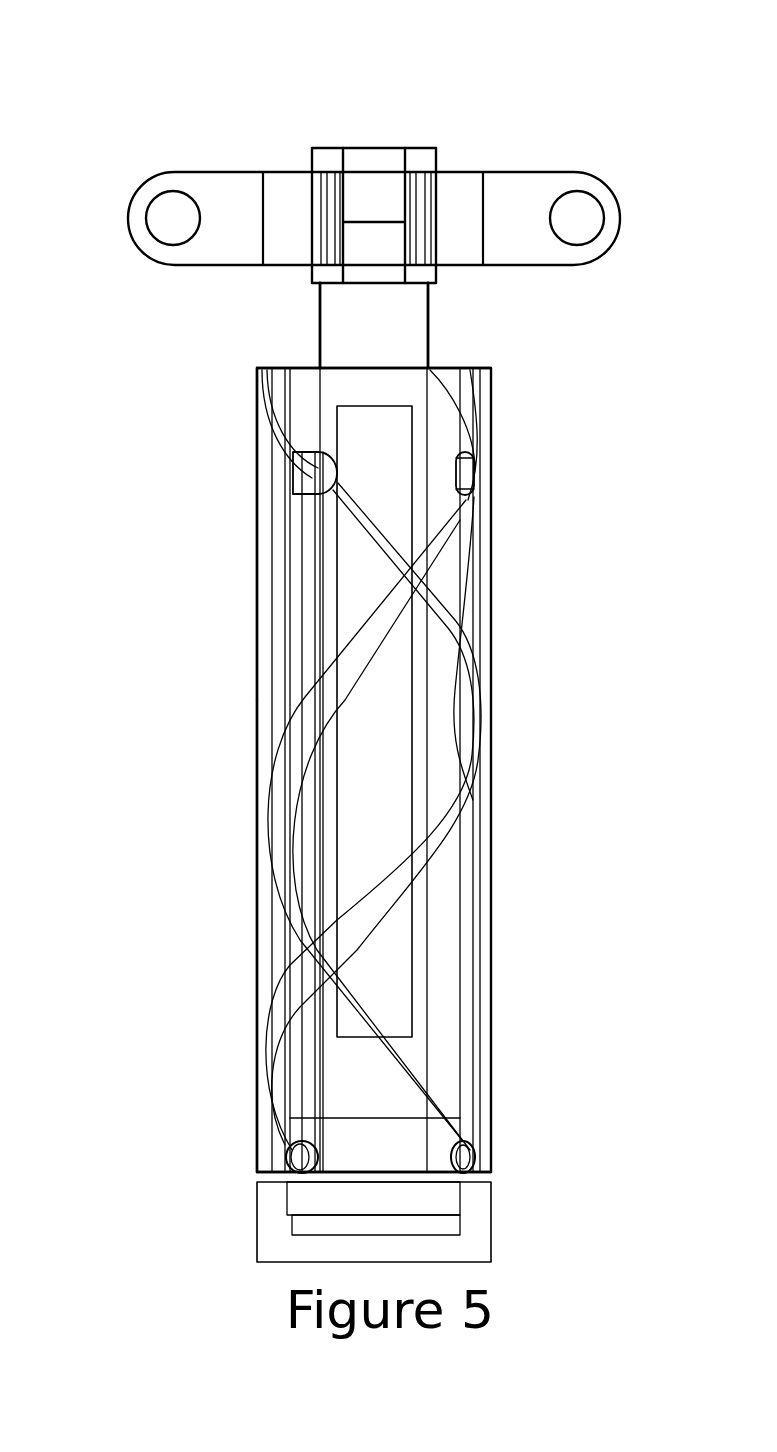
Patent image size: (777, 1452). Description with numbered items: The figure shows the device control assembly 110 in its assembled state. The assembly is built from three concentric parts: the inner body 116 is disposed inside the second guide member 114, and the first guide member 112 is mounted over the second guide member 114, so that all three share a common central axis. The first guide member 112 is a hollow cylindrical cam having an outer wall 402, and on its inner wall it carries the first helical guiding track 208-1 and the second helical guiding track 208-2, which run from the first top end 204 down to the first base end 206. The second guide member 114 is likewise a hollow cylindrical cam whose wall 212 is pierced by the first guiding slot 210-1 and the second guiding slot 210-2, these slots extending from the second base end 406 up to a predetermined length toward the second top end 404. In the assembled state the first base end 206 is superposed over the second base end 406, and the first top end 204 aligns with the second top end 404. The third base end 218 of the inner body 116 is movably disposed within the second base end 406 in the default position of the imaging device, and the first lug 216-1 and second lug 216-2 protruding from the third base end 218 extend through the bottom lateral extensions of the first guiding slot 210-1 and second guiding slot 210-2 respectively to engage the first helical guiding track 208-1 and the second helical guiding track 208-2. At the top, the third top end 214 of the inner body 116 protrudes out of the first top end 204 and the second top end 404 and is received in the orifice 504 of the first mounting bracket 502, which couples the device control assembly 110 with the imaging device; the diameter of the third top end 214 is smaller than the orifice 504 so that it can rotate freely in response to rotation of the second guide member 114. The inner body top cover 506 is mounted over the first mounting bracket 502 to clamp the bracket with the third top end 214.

The device control assembly 110 is at (393, 72).
The first guide member 112 is at (258, 712).
The second guide member 114 is at (475, 878).
The inner body 116 is at (375, 405).
The first top end 204 is at (490, 368).
The first base end 206 is at (257, 1172).
The first helical guiding track 208-1 is at (447, 552).
The second helical guiding track 208-2 is at (367, 548).
The first guiding slot 210-1 is at (465, 513).
The second guiding slot 210-2 is at (310, 585).
The wall 212 is at (275, 628).
The third top end 214 is at (435, 283).
The first lug 216-1 is at (476, 1174).
The second lug 216-2 is at (295, 1145).
The third base end 218 is at (444, 1224).
The outer wall 402 is at (265, 940).
The second top end 404 is at (257, 398).
The second base end 406 is at (260, 1228).
The first mounting bracket 502 is at (540, 180).
The orifice 504 is at (423, 197).
The inner body top cover 506 is at (365, 147).